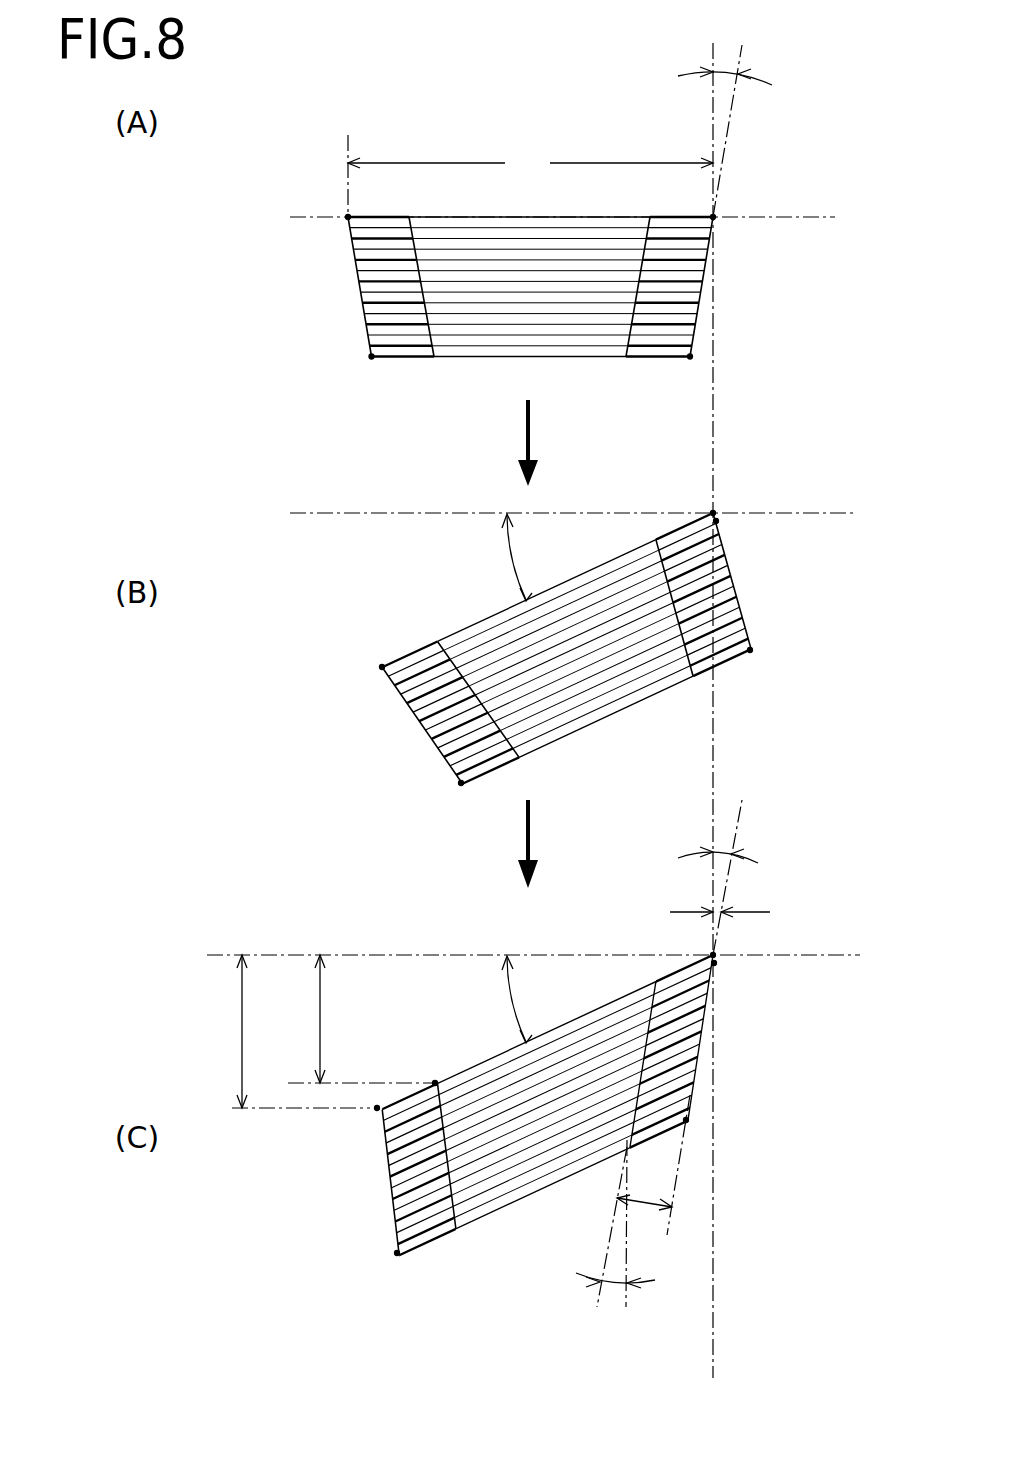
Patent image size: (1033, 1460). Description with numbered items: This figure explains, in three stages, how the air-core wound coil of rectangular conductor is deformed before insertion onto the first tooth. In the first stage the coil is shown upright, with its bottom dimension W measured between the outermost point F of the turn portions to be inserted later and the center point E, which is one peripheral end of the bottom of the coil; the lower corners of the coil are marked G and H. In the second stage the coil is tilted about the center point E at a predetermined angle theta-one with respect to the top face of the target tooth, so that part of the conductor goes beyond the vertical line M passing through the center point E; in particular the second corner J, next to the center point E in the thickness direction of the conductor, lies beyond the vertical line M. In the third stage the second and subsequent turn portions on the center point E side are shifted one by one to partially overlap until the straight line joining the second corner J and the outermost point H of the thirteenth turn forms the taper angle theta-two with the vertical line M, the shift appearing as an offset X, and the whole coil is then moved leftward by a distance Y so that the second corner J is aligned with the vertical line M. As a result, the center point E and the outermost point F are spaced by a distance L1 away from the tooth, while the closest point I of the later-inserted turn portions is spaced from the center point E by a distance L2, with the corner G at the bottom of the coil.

The center point E is at (713, 217).
The outermost point F is at (348, 217).
The point G (lower left corner of strip) G is at (372, 356).
The outermost point H is at (690, 356).
The closest point I is at (435, 1083).
The second corner J is at (716, 521).
The vertical line M is at (713, 722).
The bottom dimension W is at (530, 162).
The offset X is at (644, 1191).
The distance Y is at (731, 912).
The distance L1 is at (244, 1031).
The distance L2 is at (324, 1019).